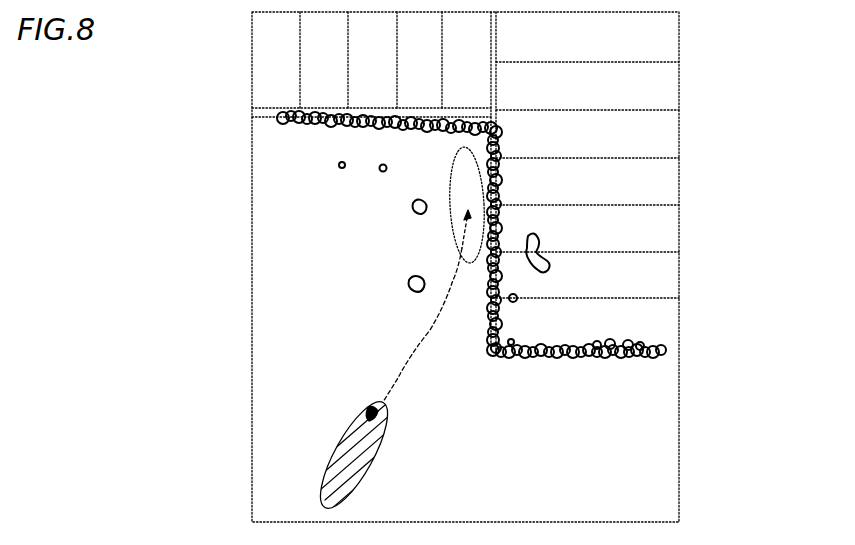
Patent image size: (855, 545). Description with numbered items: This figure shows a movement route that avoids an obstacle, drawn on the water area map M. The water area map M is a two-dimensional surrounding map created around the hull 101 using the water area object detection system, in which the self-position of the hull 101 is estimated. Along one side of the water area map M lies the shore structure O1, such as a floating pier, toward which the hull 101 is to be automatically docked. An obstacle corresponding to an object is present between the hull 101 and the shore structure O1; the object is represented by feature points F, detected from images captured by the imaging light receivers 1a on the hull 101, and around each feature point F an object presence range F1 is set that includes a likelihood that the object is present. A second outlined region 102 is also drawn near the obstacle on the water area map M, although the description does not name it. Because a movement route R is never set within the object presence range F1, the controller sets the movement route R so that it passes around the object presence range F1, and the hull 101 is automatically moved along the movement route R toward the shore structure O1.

The water area map M is at (240, 60).
The shore structure O1 is at (672, 135).
The feature point F is at (642, 346).
The object presence range F1 is at (628, 346).
The second suction region (100) 102 is at (453, 223).
The movement route R is at (396, 369).
The hull 101 is at (333, 461).
The imaging light receiver 1a is at (364, 413).